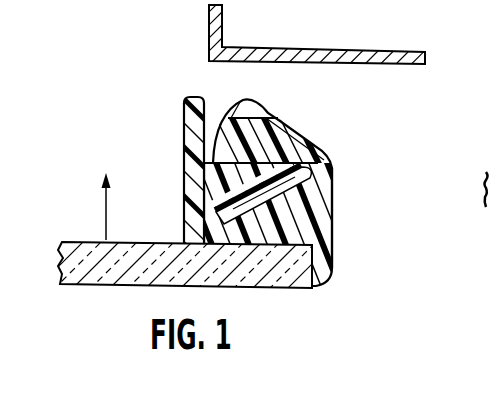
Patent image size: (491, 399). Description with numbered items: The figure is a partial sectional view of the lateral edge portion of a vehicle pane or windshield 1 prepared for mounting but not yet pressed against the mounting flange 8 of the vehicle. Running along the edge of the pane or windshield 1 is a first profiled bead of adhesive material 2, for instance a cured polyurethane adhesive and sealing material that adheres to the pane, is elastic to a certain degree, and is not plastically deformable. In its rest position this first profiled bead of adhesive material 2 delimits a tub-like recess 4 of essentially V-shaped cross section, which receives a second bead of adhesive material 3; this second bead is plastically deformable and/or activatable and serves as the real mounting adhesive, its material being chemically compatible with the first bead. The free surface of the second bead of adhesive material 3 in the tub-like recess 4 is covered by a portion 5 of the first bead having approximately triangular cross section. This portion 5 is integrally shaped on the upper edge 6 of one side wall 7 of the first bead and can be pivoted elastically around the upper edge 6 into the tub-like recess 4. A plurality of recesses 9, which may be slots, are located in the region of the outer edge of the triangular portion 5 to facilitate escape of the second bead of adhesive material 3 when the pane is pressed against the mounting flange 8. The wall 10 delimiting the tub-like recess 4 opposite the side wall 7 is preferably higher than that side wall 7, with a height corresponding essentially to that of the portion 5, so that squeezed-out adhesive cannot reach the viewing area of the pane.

The pane or windshield 1 is at (105, 287).
The first profiled bead of adhesive material 2 is at (244, 182).
The second bead of adhesive material 3 is at (330, 232).
The tub-like recess 4 is at (205, 178).
The portion 5 is at (290, 137).
The upper edge 6 is at (333, 158).
The side wall 7 is at (325, 203).
The mounting flange 8 is at (312, 55).
The recesses 9 is at (249, 107).
The wall 10 is at (188, 114).